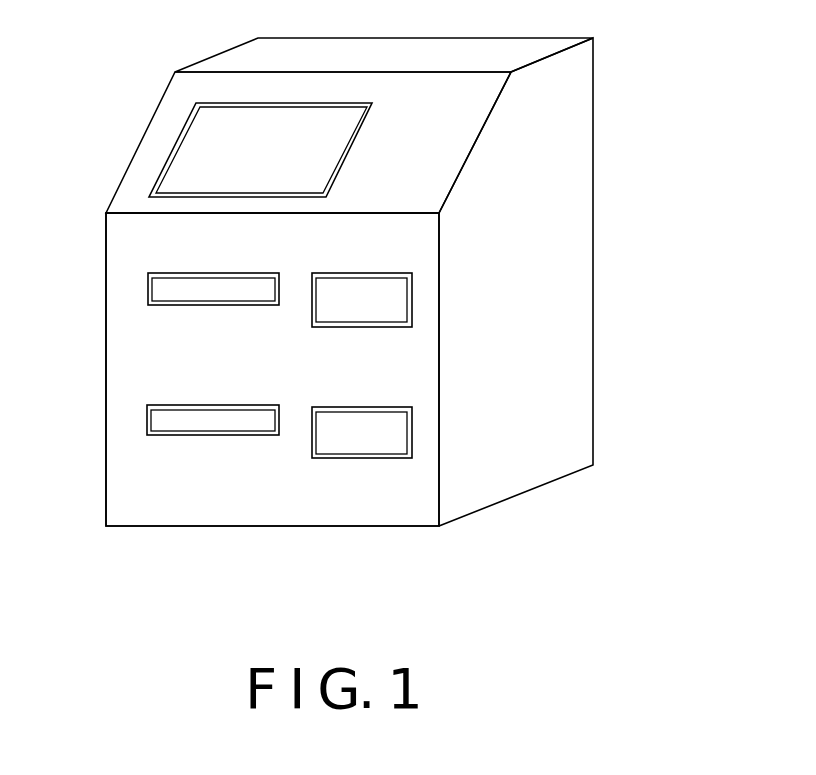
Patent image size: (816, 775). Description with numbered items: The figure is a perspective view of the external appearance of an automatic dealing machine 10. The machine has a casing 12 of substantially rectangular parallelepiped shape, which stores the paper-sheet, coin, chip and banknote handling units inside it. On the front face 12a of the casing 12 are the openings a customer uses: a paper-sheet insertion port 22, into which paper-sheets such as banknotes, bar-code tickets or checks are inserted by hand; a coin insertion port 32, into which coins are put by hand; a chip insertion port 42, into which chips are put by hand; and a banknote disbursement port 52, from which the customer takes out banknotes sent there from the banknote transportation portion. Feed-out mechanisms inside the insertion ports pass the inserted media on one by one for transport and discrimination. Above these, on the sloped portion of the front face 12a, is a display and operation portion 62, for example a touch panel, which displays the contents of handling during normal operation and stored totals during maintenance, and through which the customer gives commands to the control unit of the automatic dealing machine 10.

The automatic dealing machine 10 is at (598, 120).
The casing 12 is at (563, 292).
The front face 12a is at (135, 354).
The paper-sheet insertion port 22 is at (215, 305).
The coin insertion port 32 is at (360, 327).
The chip insertion port 42 is at (362, 458).
The banknote disbursement port 52 is at (210, 435).
The display and operation portion 62 is at (339, 133).